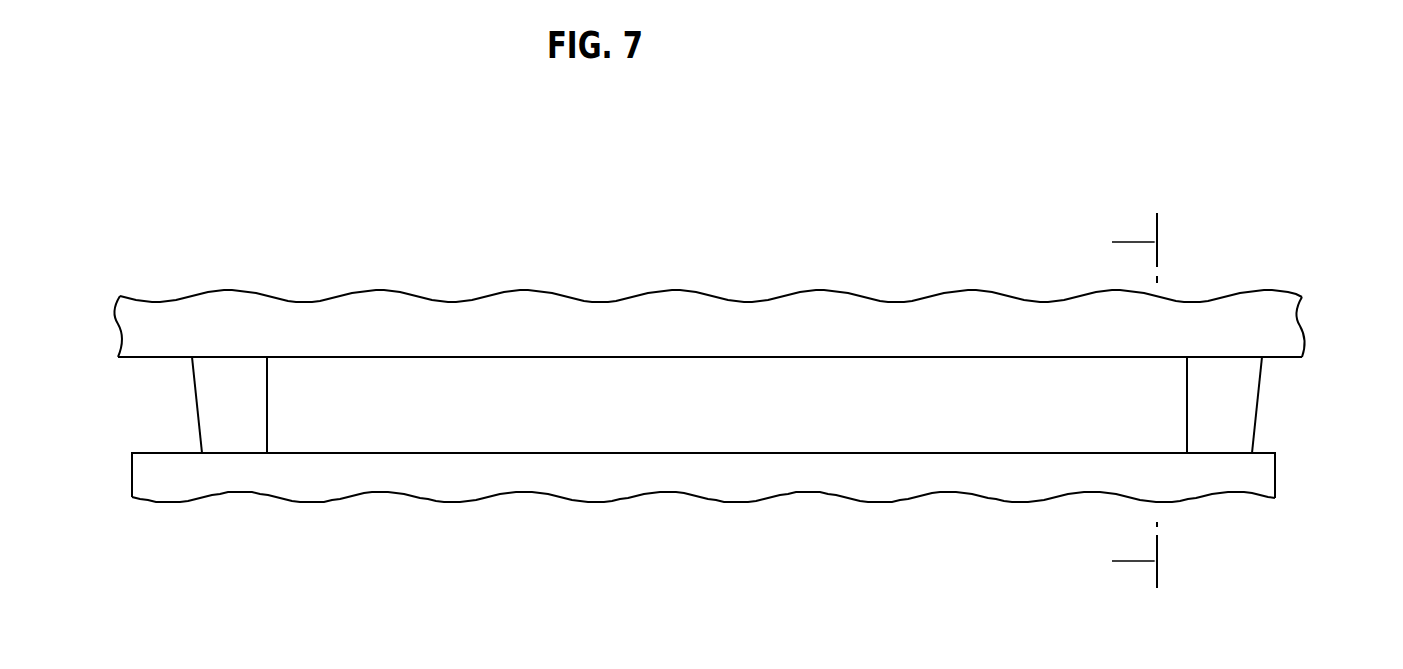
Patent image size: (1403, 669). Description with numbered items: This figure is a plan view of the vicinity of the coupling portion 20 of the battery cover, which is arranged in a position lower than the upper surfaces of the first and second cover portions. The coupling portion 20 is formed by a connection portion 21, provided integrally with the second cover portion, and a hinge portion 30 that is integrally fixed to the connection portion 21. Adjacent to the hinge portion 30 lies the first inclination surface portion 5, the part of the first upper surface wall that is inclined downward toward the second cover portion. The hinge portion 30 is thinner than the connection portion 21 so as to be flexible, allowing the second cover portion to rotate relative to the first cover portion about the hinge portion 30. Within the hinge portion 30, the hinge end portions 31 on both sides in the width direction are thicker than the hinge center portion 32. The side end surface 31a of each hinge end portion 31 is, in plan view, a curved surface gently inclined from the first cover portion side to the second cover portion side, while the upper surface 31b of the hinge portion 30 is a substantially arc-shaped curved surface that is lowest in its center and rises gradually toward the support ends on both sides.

The coupling portion 20 is at (761, 220).
The first inclination surface portion 5 is at (665, 313).
The hinge portion 30 is at (576, 352).
The hinge center portion 32 is at (903, 400).
The hinge end portion 31 is at (215, 350).
The side end surface 31a is at (197, 402).
The upper surface 31b is at (242, 397).
The connection portion 21 is at (803, 475).